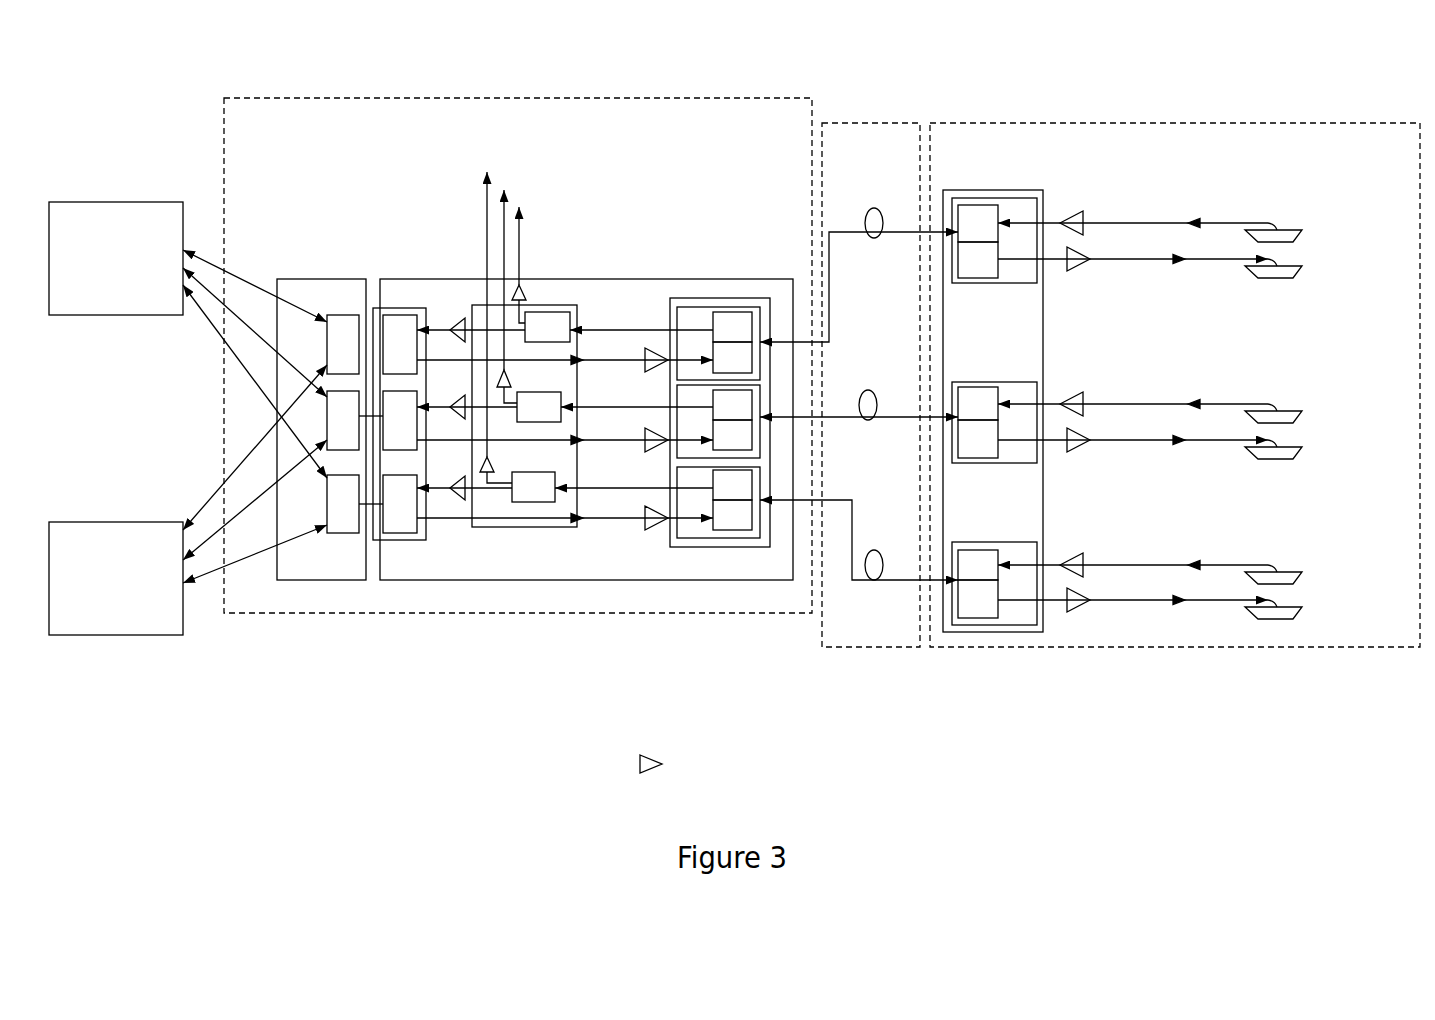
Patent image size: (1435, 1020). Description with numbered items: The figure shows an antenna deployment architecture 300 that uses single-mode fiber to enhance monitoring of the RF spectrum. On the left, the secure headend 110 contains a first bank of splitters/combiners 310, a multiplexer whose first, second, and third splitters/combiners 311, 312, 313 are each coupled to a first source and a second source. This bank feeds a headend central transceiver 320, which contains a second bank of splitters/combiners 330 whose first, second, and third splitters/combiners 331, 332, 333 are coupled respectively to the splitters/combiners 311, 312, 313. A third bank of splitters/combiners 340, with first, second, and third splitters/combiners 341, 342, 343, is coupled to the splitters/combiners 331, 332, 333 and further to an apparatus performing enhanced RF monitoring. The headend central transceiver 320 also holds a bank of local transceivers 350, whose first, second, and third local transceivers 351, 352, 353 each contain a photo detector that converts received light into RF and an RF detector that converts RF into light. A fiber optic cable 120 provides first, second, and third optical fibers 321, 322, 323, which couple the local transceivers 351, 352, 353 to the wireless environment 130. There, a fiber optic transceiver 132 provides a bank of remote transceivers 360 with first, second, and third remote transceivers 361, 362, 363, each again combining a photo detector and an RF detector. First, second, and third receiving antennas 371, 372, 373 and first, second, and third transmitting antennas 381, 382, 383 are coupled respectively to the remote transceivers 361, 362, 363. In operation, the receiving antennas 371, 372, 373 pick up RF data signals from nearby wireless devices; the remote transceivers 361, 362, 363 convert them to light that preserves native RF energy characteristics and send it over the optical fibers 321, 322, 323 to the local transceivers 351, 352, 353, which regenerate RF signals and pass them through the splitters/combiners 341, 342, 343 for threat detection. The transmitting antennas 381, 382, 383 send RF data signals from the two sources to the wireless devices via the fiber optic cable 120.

The antenna deployment architecture 300 is at (257, 75).
The secure headend 110 is at (512, 98).
The fiber optic cable 120 is at (877, 120).
The wireless environment 130 is at (1183, 120).
The fiber optic transceiver 132 is at (990, 128).
The first bank of splitters/combiners 310 is at (362, 280).
The first splitter/combiner 311 is at (322, 348).
The second splitter/combiner 312 is at (322, 410).
The third splitter/combiner 313 is at (340, 535).
The headend central transceiver 320 is at (708, 298).
The first optical fiber 321 is at (832, 285).
The second optical fiber 322 is at (843, 420).
The third optical fiber 323 is at (887, 582).
The second bank of splitters/combiners 330 is at (410, 305).
The first splitter/combiner 331 is at (428, 320).
The second splitter/combiner 332 is at (408, 452).
The third splitter/combiner 333 is at (402, 535).
The third bank of splitters/combiners 340 is at (575, 300).
The first splitter/combiner 341 is at (547, 312).
The second splitter/combiner 342 is at (530, 422).
The third splitter/combiner 343 is at (530, 503).
The bank of local transceivers 350 is at (748, 298).
The first local transceiver 351 is at (685, 305).
The second local transceiver 352 is at (765, 415).
The third local transceiver 353 is at (675, 537).
The bank of remote transceivers 360 is at (1043, 196).
The first remote transceiver 361 is at (1022, 284).
The second remote transceiver 362 is at (1022, 464).
The third remote transceiver 363 is at (1015, 626).
The first receiving antenna 371 is at (1277, 228).
The second receiving antenna 372 is at (1277, 410).
The third receiving antenna 373 is at (1277, 571).
The first transmitting antenna 381 is at (1270, 279).
The second transmitting antenna 382 is at (1265, 460).
The third transmitting antenna 383 is at (1270, 620).